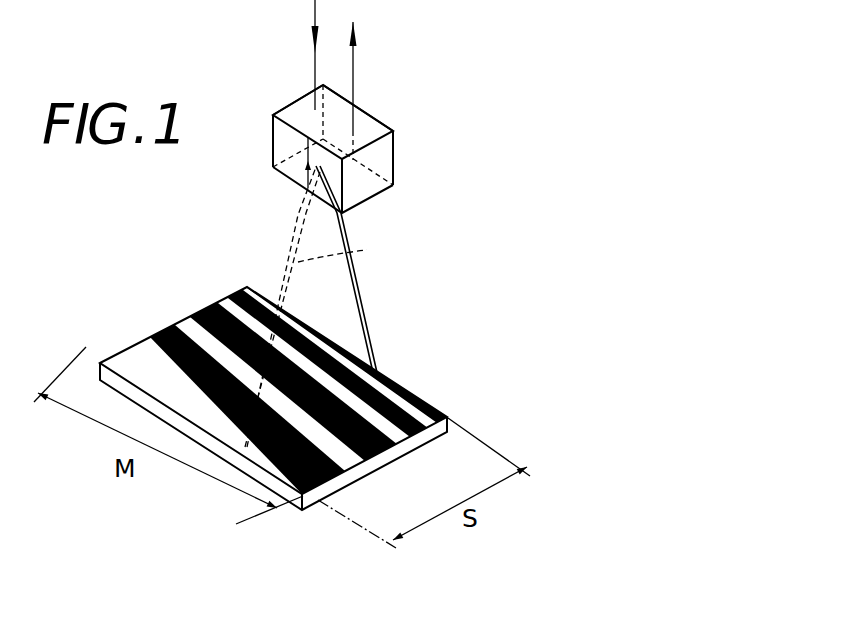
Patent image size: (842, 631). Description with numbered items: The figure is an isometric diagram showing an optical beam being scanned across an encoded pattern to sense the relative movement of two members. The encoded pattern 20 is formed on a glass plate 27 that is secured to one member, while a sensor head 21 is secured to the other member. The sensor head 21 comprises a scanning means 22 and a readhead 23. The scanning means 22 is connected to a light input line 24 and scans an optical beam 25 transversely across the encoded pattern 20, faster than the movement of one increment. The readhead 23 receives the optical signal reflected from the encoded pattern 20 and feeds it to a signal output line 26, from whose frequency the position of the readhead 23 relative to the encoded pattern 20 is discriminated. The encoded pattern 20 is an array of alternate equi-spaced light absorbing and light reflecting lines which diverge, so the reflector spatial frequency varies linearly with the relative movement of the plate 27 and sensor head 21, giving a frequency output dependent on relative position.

The encoded pattern 20 is at (243, 290).
The sensor head 21 is at (372, 110).
The scanning means 22 is at (298, 117).
The readhead 23 is at (388, 128).
The light input line 24 is at (313, 15).
The optical beam 25 is at (345, 247).
The signal output line 26 is at (358, 40).
The glass plate 27 is at (127, 393).